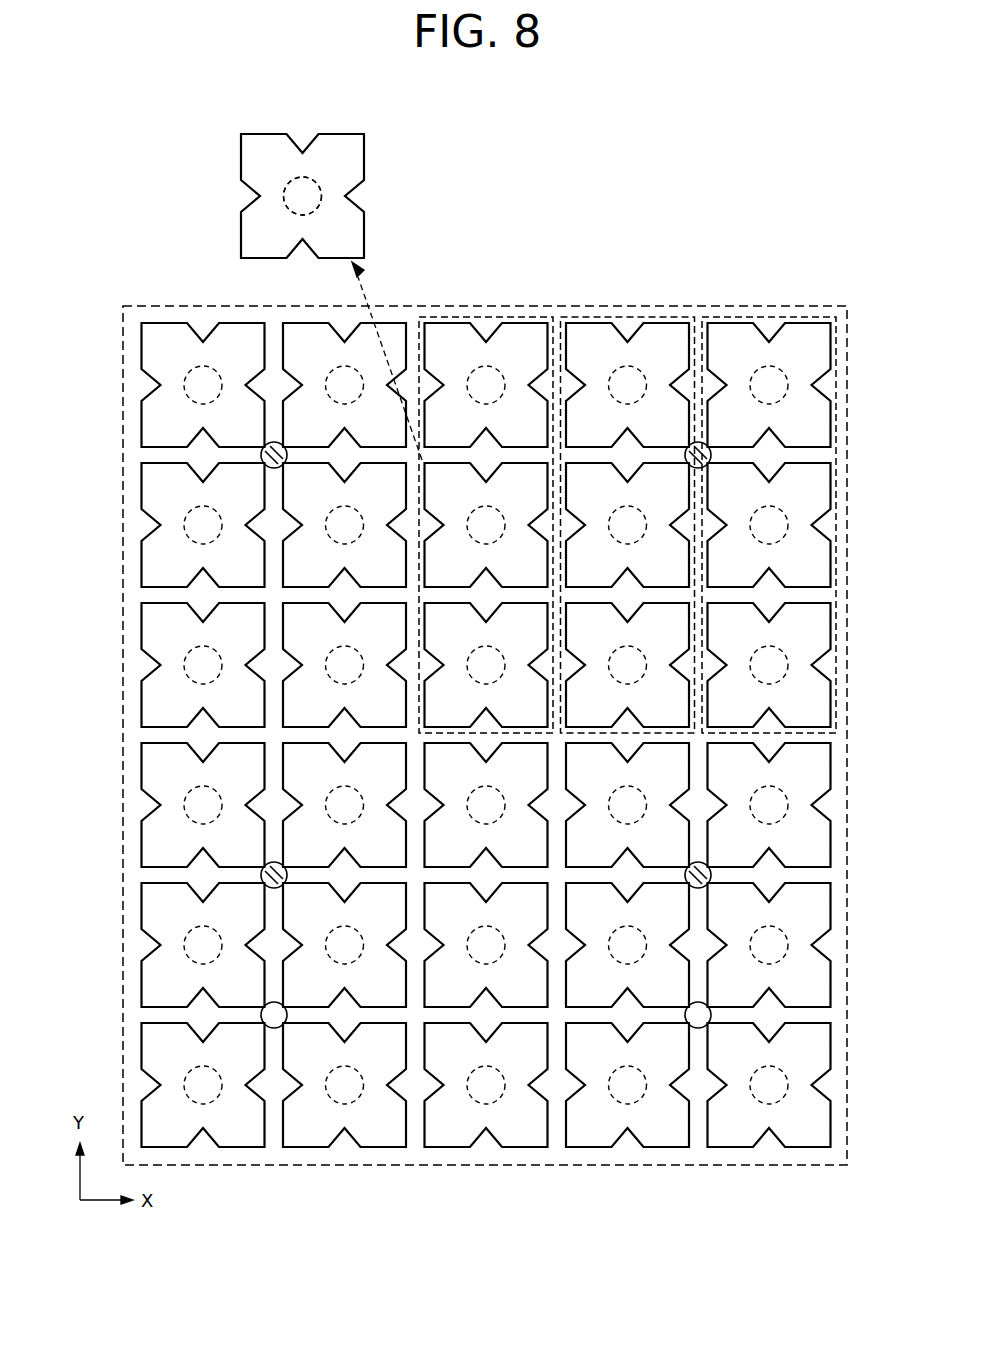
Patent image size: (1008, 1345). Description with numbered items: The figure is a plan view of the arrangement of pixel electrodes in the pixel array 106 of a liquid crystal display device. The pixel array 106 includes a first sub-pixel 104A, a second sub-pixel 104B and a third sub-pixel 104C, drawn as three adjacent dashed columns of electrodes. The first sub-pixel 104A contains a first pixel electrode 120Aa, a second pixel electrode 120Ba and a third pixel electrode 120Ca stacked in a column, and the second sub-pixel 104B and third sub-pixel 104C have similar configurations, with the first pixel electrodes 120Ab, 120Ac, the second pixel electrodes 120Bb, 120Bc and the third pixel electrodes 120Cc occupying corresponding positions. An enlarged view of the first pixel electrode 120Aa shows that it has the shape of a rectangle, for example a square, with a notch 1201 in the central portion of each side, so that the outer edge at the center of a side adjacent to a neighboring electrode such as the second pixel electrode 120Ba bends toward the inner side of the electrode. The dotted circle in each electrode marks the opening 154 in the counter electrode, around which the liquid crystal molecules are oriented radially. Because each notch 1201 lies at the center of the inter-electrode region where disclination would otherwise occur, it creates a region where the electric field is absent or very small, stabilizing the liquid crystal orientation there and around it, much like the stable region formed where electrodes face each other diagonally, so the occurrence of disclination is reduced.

The pixel array 106 is at (164, 306).
The first pixel electrode 120Aa is at (353, 160).
The notch 1201 is at (350, 197).
The opening 154 is at (485, 365).
The first sub-pixel 104A is at (537, 317).
The second sub-pixel 104B is at (680, 317).
The third sub-pixel 104C is at (817, 317).
The second pixel electrode 120Ba is at (544, 424).
The second pixel electrode 120Bb is at (686, 424).
The second pixel electrode 120Bc is at (826, 424).
The first pixel electrode 120Ab is at (686, 564).
The first pixel electrode 120Ac is at (826, 564).
The third pixel electrode 120Ca is at (544, 704).
The third pixel electrode 120Cc is at (686, 704).